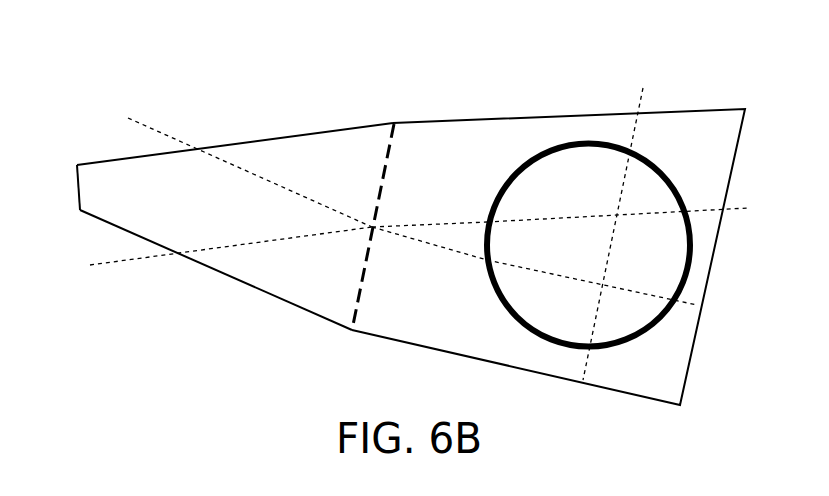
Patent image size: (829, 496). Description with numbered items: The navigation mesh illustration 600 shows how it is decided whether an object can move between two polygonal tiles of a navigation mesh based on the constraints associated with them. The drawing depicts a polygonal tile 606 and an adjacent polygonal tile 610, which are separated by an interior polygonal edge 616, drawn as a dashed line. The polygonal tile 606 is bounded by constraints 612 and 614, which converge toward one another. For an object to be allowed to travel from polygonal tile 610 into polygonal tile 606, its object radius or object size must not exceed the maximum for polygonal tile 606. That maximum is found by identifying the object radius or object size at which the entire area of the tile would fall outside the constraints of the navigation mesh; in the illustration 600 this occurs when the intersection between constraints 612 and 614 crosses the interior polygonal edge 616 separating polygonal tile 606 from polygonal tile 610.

The optical assembly 600 is at (138, 55).
The polygonal tile 606 is at (197, 203).
The polygonal tile 610 is at (475, 156).
The constraint 612 is at (243, 172).
The constraint 614 is at (208, 250).
The interior polygonal edge 616 is at (355, 305).